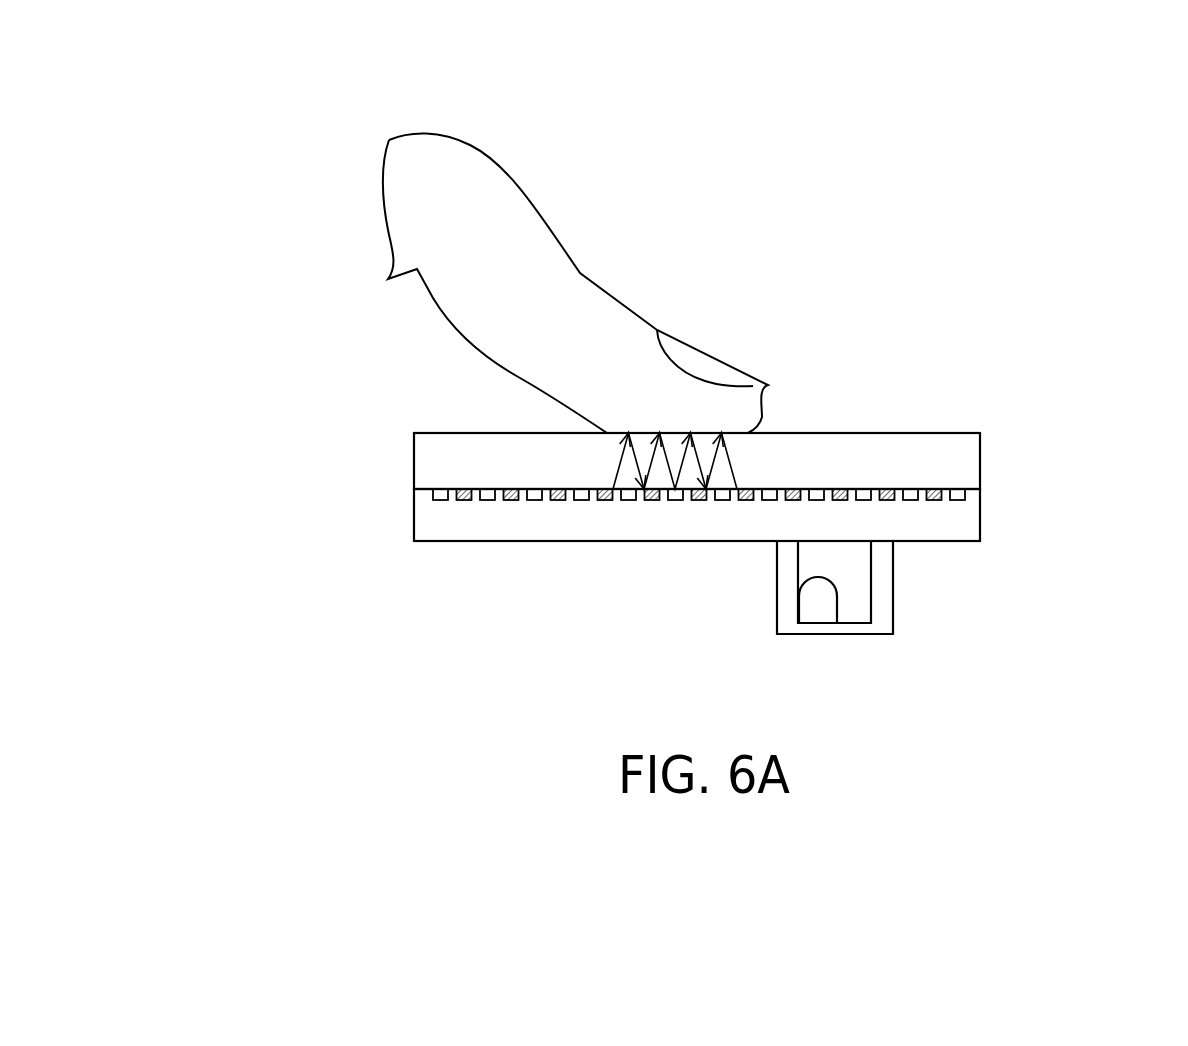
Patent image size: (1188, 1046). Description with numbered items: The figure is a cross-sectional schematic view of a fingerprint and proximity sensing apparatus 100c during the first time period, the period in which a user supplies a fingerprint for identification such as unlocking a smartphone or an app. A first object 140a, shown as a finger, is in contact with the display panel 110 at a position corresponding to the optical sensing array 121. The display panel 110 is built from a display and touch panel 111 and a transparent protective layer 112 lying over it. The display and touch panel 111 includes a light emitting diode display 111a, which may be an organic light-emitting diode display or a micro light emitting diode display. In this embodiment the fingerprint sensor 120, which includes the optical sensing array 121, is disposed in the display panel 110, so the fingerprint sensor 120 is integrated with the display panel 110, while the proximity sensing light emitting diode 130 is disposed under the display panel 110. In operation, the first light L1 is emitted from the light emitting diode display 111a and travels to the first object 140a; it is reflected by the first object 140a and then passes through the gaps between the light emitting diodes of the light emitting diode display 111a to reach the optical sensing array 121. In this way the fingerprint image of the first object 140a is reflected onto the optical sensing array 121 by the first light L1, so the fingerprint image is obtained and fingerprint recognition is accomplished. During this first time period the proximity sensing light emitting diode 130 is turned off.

The fingerprint and proximity sensing apparatus 100c is at (652, 373).
The display panel 110 is at (619, 283).
The display and touch panel 111 is at (972, 531).
The light emitting diode display 111a is at (952, 493).
The transparent protective layer 112 is at (972, 462).
The fingerprint sensor 120 is at (732, 429).
The optical sensing array 121 is at (931, 488).
The proximity sensing light emitting diode 130 is at (823, 601).
The first object 140a is at (420, 238).
The first light L1 is at (733, 460).